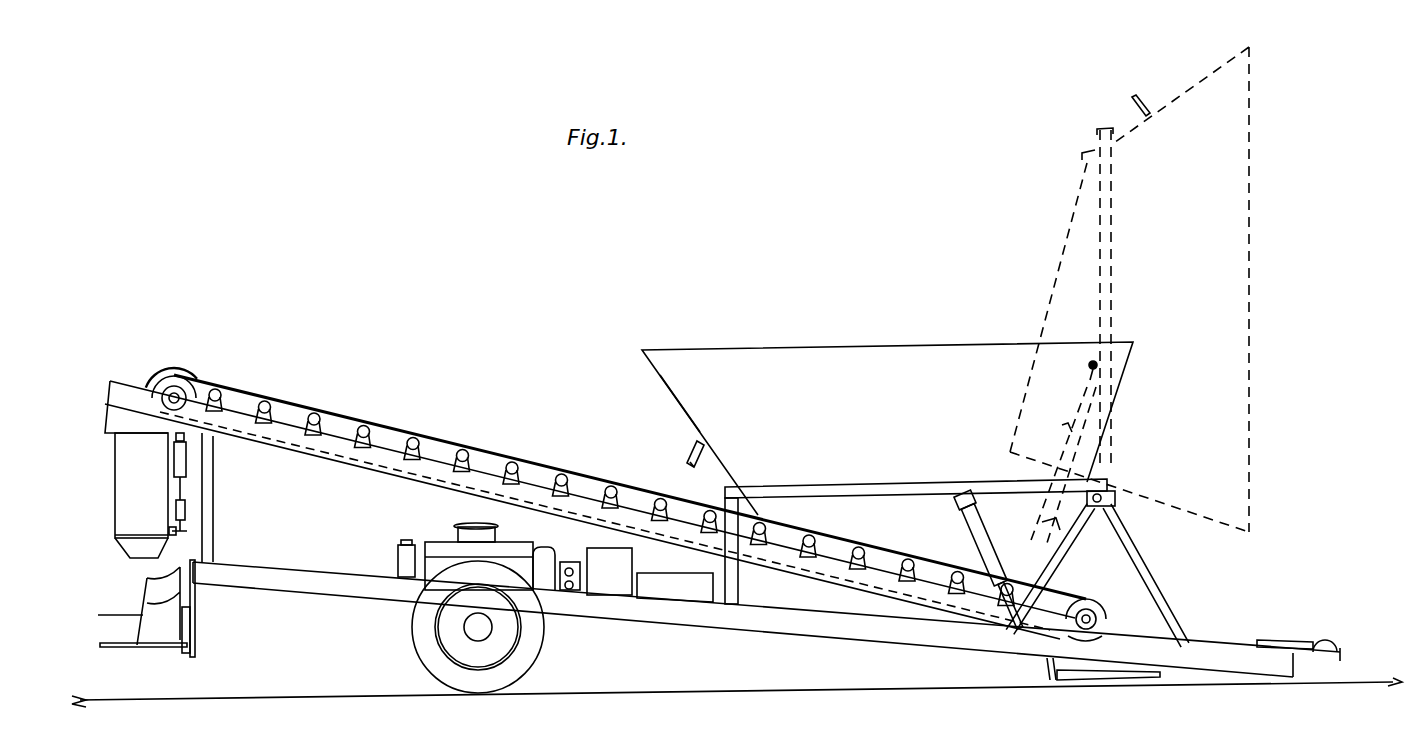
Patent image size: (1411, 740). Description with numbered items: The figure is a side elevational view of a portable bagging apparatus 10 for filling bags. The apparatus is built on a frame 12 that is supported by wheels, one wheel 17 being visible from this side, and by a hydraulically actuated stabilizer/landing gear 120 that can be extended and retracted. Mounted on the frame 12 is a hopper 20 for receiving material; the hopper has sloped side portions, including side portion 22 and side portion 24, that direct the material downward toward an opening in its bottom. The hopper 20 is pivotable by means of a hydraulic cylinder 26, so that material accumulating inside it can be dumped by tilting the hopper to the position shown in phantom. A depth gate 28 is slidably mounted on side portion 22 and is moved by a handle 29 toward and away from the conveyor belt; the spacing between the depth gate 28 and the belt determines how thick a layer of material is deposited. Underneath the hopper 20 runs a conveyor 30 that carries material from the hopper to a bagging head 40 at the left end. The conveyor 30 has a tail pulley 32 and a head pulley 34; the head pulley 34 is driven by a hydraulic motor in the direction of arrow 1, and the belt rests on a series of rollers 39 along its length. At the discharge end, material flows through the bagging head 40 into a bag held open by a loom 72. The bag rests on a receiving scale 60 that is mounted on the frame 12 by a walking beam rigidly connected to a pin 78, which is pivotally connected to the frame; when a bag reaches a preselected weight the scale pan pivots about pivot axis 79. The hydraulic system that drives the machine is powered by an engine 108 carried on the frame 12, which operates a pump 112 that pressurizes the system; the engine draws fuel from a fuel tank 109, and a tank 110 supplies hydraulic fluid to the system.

The portable bagging apparatus 10 is at (432, 372).
The arrow 1 is at (145, 385).
The head pulley 34 is at (188, 382).
The conveyor 30 is at (290, 395).
The rollers 39 is at (453, 432).
The tail pulley 32 is at (1090, 598).
The bagging head 40 is at (133, 490).
The frame 12 is at (345, 572).
The pivot axis 79 is at (285, 608).
The pin 78 is at (160, 628).
The loom 72 is at (147, 590).
The receiving scale 60 is at (122, 648).
The wheel 17 is at (418, 645).
The engine 108 is at (440, 545).
The pump 112 is at (570, 592).
The tank 110 is at (615, 580).
The fuel tank 109 is at (675, 588).
The hopper 20 is at (735, 343).
The side portion 22 is at (680, 385).
The depth gate 28 is at (700, 440).
The handle 29 is at (690, 462).
The side portion 24 is at (1132, 362).
The hydraulic cylinder 26 is at (962, 540).
The stabilizer/landing gear 120 is at (1110, 690).